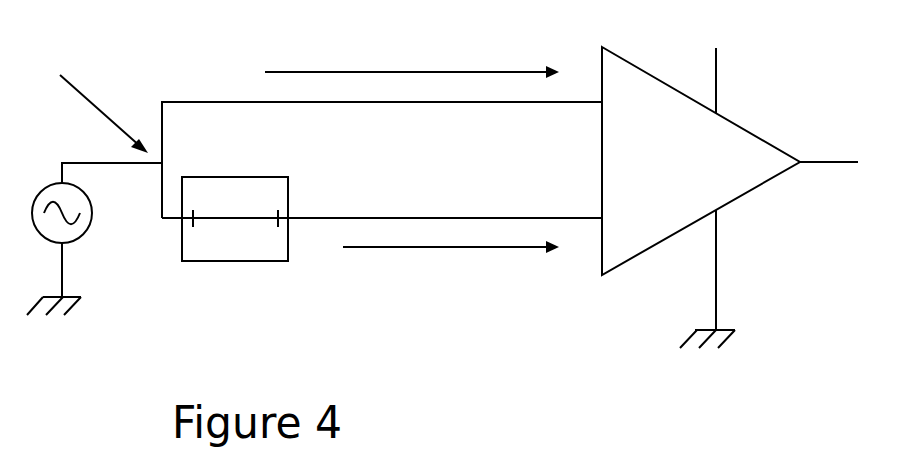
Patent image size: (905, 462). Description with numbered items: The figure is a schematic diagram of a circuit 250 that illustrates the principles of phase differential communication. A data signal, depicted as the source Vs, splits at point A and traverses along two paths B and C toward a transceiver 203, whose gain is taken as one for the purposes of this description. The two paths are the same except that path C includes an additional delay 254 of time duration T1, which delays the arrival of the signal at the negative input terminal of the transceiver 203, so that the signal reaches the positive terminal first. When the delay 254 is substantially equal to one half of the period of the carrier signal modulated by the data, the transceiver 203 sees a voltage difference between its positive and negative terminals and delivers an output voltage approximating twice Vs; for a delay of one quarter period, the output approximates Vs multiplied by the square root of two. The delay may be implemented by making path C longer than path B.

The circuit 250 is at (194, 44).
The delay 254 is at (262, 246).
The transceiver 203 is at (665, 218).